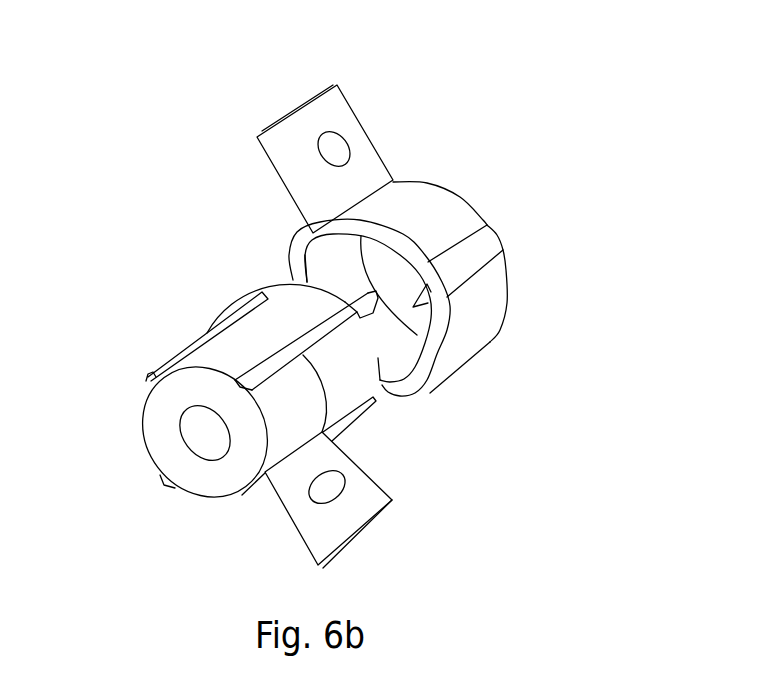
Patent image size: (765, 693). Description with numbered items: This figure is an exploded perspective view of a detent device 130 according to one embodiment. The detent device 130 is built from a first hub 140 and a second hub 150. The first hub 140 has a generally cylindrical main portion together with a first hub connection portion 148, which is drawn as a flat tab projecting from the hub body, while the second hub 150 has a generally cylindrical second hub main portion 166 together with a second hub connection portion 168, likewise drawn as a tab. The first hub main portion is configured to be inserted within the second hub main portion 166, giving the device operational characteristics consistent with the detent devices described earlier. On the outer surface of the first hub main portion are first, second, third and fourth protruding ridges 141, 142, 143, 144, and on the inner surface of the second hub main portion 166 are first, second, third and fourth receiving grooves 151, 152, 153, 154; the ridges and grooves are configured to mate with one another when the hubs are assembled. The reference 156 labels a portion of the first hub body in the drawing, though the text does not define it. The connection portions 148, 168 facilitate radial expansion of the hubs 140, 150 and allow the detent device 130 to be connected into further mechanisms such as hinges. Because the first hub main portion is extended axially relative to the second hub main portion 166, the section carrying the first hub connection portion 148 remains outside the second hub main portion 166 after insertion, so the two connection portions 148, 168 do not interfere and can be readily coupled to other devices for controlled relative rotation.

The detent device 130 is at (195, 222).
The first hub 140 is at (208, 352).
The first protruding ridge 141 is at (252, 393).
The second protruding ridge 142 is at (358, 412).
The third protruding ridge 143 is at (164, 483).
The fourth protruding ridge 144 is at (148, 375).
The first hub connection portion 148 is at (352, 513).
The second hub 150 is at (470, 218).
The first receiving groove 151 is at (450, 320).
The second receiving groove 152 is at (412, 378).
The third receiving groove 153 is at (368, 292).
The fourth receiving groove 154 is at (343, 262).
The cylindrical body 156 is at (270, 329).
The second hub main portion 166 is at (498, 287).
The second hub connection portion 168 is at (327, 117).